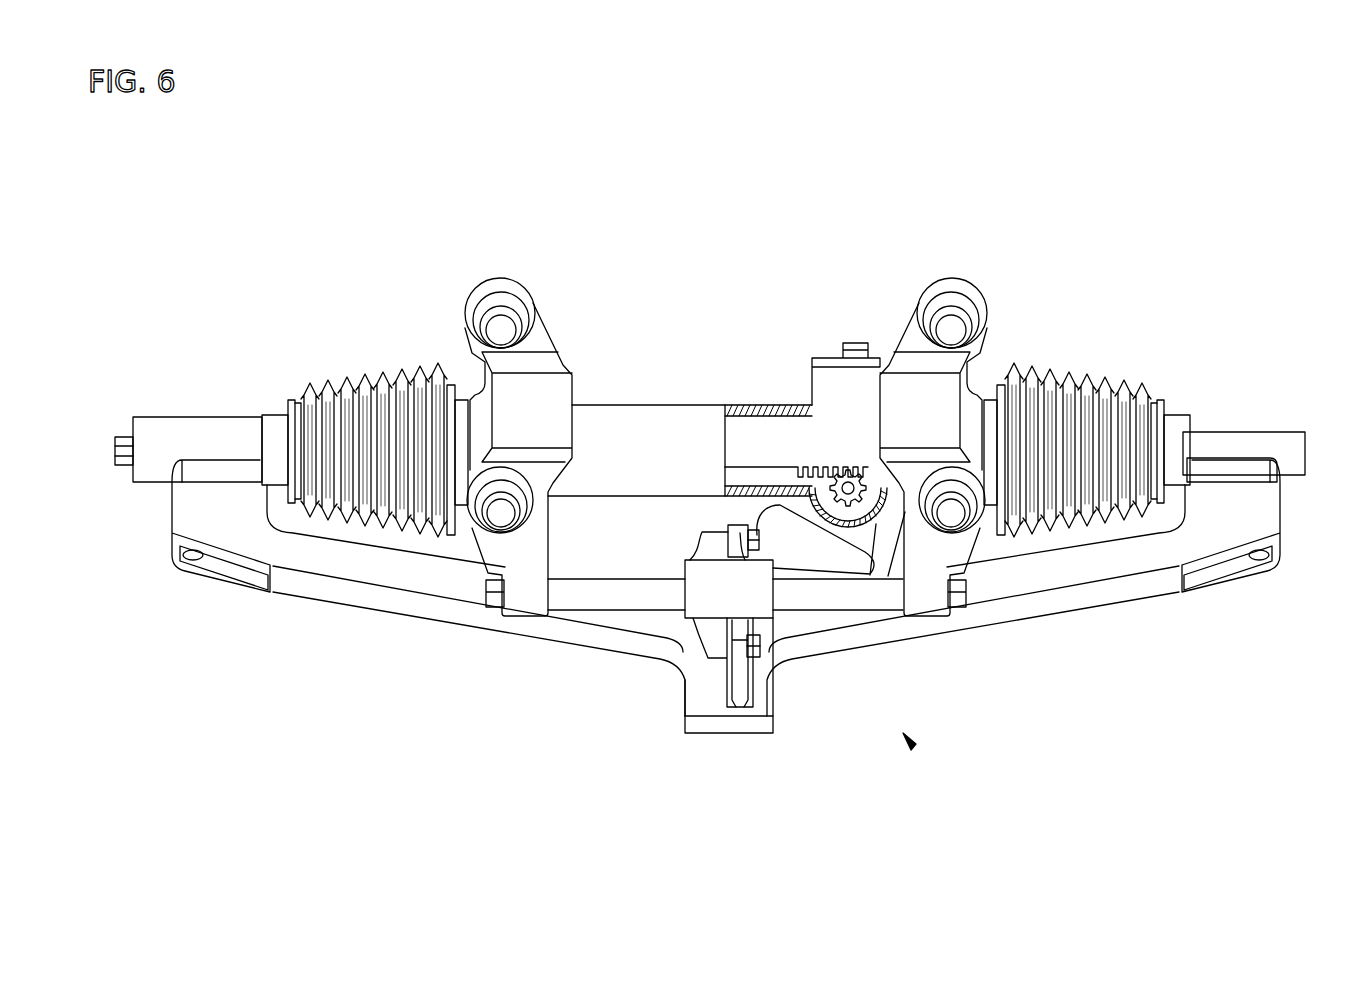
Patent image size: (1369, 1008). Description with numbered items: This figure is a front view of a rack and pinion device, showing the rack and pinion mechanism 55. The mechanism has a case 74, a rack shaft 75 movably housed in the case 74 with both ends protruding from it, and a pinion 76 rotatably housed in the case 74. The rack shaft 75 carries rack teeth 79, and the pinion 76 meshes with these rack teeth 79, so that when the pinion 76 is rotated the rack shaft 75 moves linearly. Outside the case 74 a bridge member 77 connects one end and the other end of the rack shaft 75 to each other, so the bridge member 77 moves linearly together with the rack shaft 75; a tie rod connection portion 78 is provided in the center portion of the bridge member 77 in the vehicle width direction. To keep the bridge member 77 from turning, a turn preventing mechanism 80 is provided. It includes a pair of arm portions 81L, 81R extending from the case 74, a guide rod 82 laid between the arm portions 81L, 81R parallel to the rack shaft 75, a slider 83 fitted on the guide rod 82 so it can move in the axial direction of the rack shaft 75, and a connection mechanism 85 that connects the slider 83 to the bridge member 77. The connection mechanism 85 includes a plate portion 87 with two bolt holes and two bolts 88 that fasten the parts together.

The rack and pinion mechanism 55 is at (668, 320).
The case 74 is at (640, 437).
The rack shaft 75 is at (760, 450).
The pinion 76 is at (852, 467).
The rack teeth 79 is at (837, 480).
The bridge member 77 is at (612, 640).
The tie rod connection portion 78 is at (705, 708).
The turn preventing mechanism 80 is at (903, 733).
The arm portion 81R is at (530, 605).
The arm portion 81L is at (928, 597).
The guide rod 82 is at (647, 598).
The slider 83 is at (690, 588).
The connection mechanism 85 is at (738, 714).
The plate portion 87 is at (757, 680).
The bolts 88 is at (757, 646).